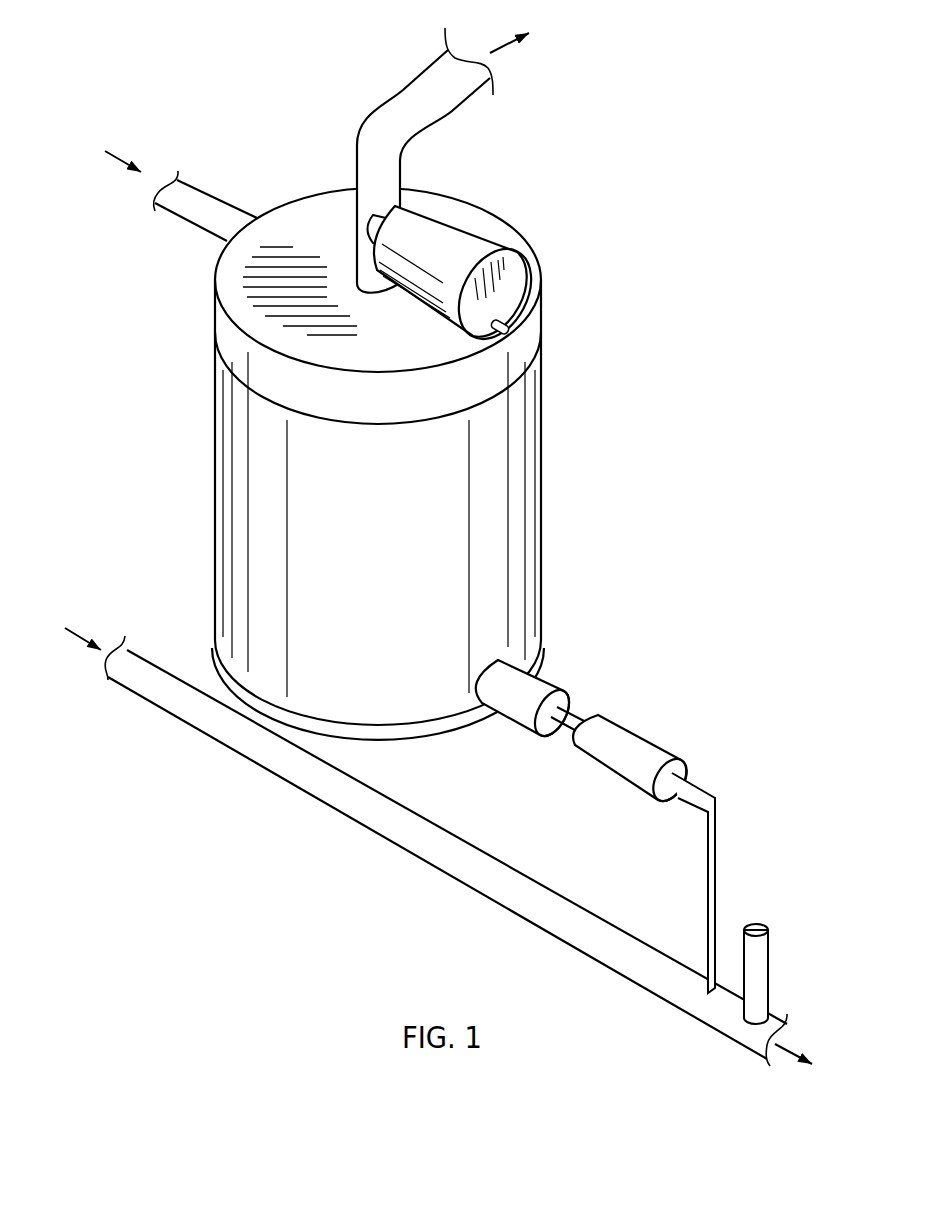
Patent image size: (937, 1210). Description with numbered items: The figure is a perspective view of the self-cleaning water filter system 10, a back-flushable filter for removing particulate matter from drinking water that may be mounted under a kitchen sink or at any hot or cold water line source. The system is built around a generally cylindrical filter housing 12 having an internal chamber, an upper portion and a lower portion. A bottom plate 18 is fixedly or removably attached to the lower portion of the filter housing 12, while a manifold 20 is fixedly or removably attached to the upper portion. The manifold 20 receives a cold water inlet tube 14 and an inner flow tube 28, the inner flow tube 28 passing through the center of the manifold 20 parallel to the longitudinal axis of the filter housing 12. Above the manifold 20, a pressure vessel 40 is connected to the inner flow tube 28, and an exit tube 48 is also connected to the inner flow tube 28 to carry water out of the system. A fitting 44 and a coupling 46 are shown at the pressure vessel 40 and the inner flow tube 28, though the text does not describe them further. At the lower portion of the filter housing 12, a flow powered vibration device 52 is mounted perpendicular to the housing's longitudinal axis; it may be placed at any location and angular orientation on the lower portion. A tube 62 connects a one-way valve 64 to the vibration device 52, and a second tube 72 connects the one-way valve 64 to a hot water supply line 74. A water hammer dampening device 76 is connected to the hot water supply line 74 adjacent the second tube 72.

The self-cleaning water filter system 10 is at (198, 91).
The filter housing 12 is at (317, 580).
The cold water inlet tube 14 is at (197, 213).
The bottom plate 18 is at (353, 728).
The manifold 20 is at (223, 330).
The inner flow tube 28 is at (380, 188).
The pressure vessel 40 is at (458, 235).
The sensor fitting 44 is at (507, 330).
The coupling stub 46 is at (382, 228).
The exit tube 48 is at (427, 82).
The flow powered vibration device 52 is at (517, 698).
The tube 62 is at (567, 720).
The one-way valve 64 is at (627, 760).
The second tube 72 is at (712, 877).
The hot water supply line 74 is at (280, 747).
The water hammer dampening device 76 is at (756, 927).